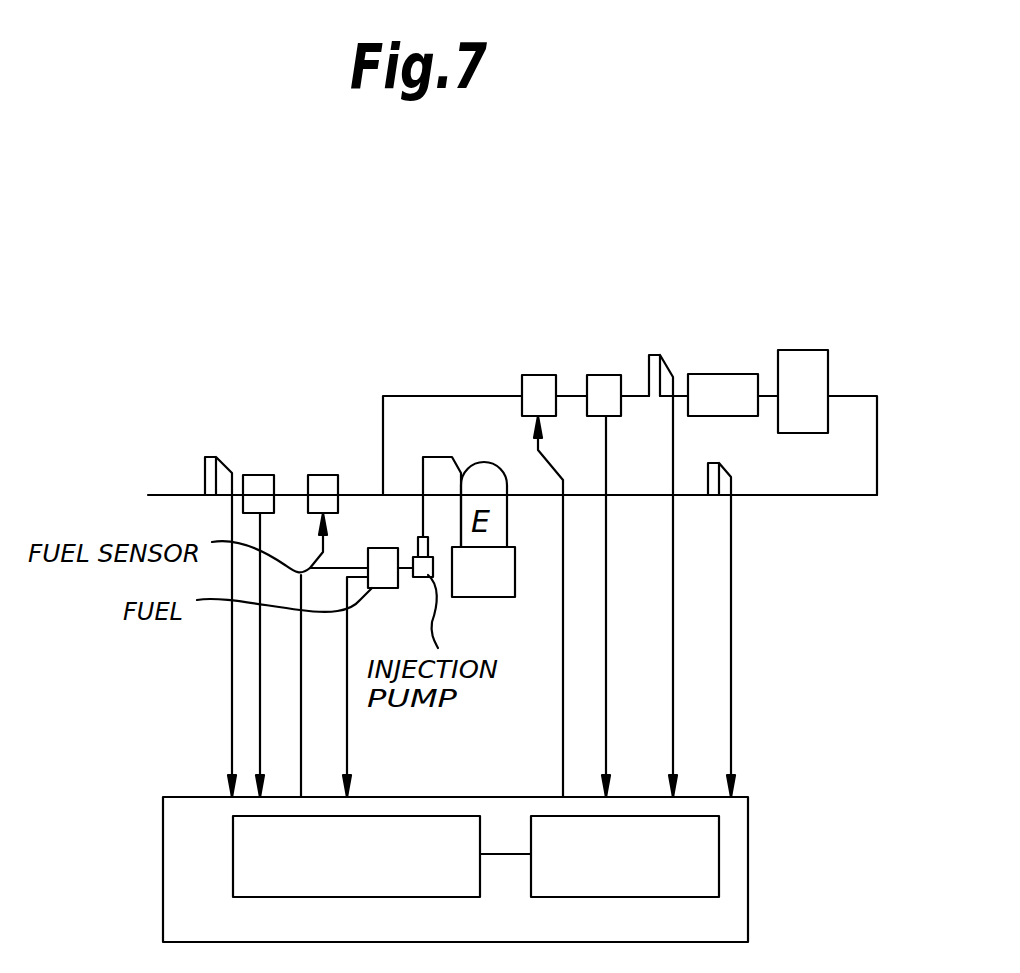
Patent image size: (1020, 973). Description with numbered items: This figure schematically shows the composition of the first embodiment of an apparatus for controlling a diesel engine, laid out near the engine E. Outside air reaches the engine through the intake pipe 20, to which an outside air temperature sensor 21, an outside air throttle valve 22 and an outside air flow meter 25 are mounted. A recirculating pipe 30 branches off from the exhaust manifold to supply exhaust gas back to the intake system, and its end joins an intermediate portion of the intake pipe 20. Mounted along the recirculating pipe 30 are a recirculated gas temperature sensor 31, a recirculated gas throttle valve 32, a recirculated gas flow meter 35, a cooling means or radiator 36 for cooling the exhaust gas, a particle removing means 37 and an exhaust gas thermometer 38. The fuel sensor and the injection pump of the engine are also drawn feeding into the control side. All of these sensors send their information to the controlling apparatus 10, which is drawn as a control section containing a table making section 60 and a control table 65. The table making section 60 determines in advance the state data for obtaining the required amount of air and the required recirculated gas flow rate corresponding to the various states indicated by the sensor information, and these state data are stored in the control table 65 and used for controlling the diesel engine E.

The controlling apparatus 10 is at (456, 819).
The intake pipe 20 is at (170, 495).
The outside air temperature sensor 21 is at (215, 455).
The outside air throttle valve 22 is at (330, 475).
The outside air flow meter 25 is at (262, 475).
The recirculating pipe 30 is at (433, 396).
The recirculated gas temperature sensor 31 is at (656, 364).
The recirculated gas throttle valve 32 is at (540, 375).
The recirculated gas flow meter 35 is at (604, 375).
The radiator 36 is at (805, 350).
The particle removing means 37 is at (724, 374).
The exhaust gas thermometer 38 is at (722, 462).
The table making section 60 is at (233, 862).
The control table 65 is at (719, 843).